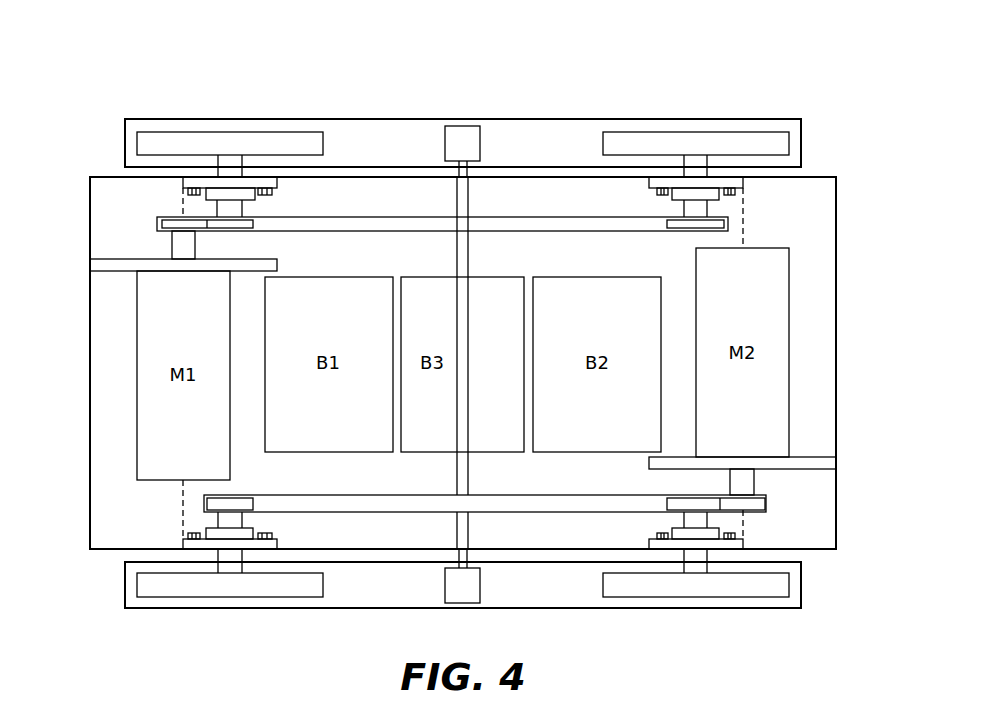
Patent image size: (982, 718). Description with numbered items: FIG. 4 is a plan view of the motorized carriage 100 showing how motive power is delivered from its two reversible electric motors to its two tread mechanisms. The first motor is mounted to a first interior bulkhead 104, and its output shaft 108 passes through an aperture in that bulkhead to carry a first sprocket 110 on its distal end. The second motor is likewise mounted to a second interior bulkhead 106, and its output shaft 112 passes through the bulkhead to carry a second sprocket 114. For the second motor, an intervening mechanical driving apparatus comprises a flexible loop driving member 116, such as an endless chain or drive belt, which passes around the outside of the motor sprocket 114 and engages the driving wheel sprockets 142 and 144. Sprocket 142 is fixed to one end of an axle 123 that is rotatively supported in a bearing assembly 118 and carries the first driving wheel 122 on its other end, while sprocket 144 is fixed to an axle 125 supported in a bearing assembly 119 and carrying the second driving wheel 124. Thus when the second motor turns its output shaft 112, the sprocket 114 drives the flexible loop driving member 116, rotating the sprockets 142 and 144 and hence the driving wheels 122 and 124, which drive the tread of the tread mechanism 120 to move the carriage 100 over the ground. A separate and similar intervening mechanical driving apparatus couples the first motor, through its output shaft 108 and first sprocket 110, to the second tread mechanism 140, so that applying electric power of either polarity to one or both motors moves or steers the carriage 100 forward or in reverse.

The motorized carriage 100 is at (797, 80).
The first interior bulkhead 104 is at (107, 271).
The second interior bulkhead 106 is at (822, 457).
The output shaft 108 is at (172, 247).
The first sprocket 110 is at (168, 217).
The output shaft 112 is at (754, 486).
The second sprocket 114 is at (757, 512).
The flexible loop driving member 116 is at (556, 495).
The bearing assembly 118 is at (206, 528).
The bearing assembly 119 is at (672, 528).
The tread mechanism 120 is at (98, 594).
The first driving wheel 122 is at (198, 597).
The axle 123 is at (242, 520).
The second driving wheel 124 is at (665, 597).
The axle 125 is at (683, 518).
The second tread mechanism 140 is at (98, 125).
The sprocket 142 is at (255, 503).
The sprocket 144 is at (667, 503).